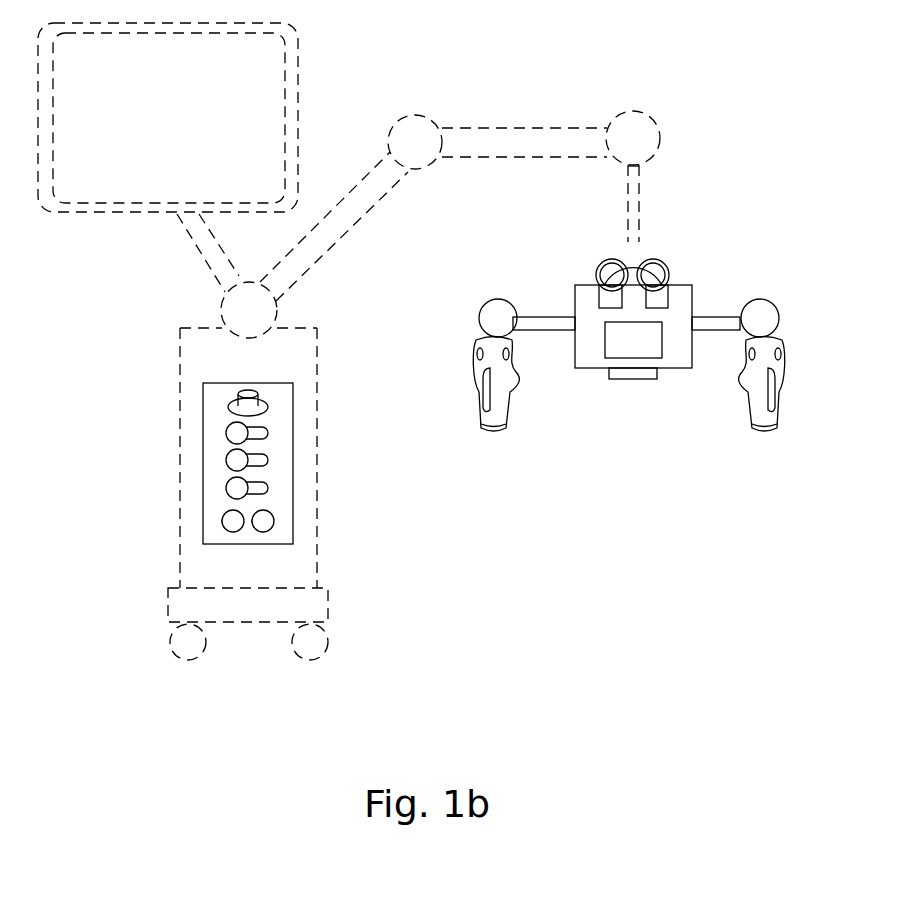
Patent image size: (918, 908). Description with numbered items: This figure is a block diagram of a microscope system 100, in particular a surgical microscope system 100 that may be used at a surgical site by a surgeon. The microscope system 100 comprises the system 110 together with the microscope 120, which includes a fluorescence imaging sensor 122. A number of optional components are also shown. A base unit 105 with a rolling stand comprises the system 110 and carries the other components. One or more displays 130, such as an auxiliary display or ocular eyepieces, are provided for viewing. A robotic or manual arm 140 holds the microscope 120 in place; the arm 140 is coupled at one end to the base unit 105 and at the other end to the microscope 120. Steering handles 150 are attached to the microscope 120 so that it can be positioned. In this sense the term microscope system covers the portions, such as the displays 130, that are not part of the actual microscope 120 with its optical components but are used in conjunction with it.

The microscope system 100 is at (724, 549).
The base unit 105 is at (328, 608).
The system 110 is at (293, 541).
The microscope 120 is at (663, 370).
The fluorescence imaging sensor 122 is at (602, 296).
The displays 130 is at (298, 85).
The arm 140 is at (660, 142).
The steering handles 150 is at (784, 345).